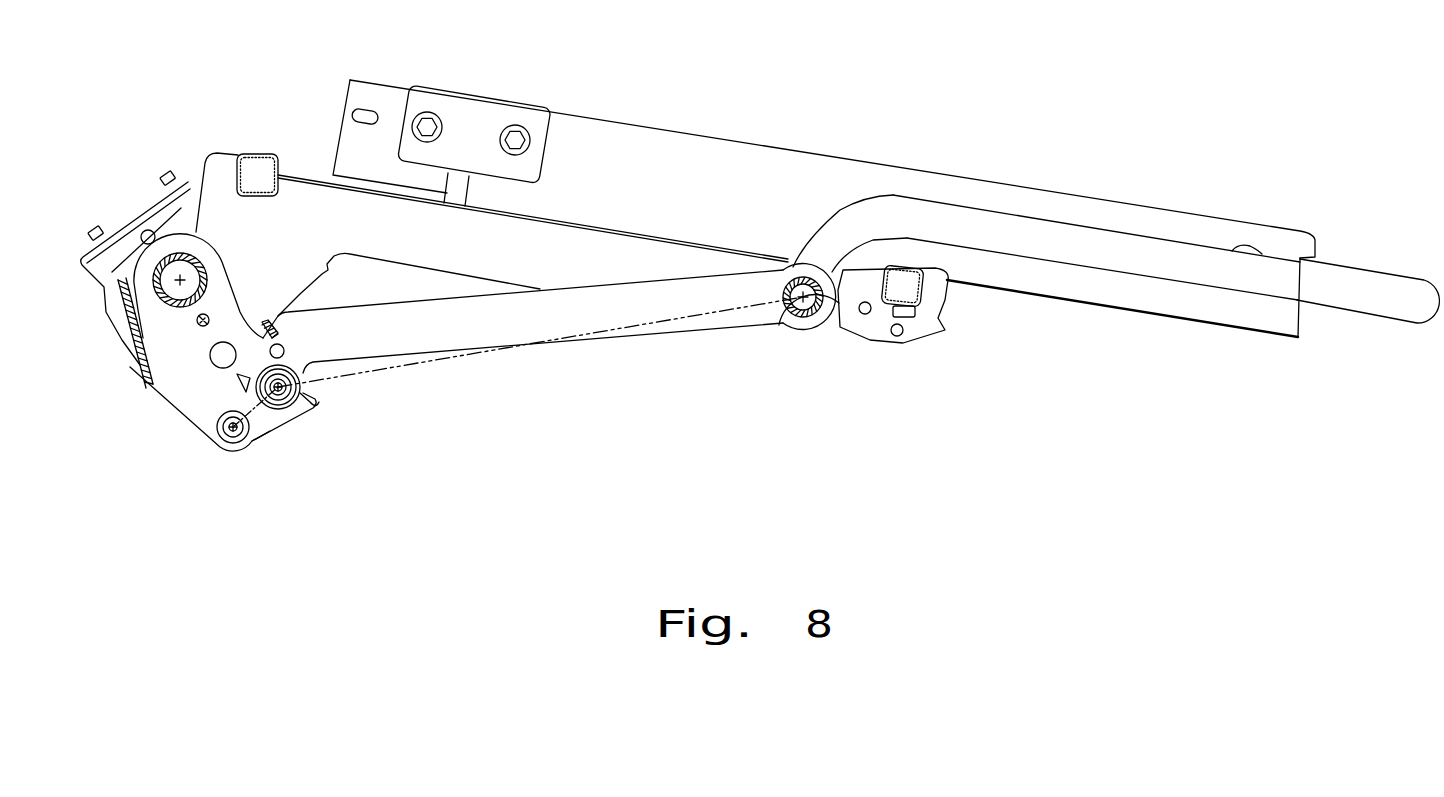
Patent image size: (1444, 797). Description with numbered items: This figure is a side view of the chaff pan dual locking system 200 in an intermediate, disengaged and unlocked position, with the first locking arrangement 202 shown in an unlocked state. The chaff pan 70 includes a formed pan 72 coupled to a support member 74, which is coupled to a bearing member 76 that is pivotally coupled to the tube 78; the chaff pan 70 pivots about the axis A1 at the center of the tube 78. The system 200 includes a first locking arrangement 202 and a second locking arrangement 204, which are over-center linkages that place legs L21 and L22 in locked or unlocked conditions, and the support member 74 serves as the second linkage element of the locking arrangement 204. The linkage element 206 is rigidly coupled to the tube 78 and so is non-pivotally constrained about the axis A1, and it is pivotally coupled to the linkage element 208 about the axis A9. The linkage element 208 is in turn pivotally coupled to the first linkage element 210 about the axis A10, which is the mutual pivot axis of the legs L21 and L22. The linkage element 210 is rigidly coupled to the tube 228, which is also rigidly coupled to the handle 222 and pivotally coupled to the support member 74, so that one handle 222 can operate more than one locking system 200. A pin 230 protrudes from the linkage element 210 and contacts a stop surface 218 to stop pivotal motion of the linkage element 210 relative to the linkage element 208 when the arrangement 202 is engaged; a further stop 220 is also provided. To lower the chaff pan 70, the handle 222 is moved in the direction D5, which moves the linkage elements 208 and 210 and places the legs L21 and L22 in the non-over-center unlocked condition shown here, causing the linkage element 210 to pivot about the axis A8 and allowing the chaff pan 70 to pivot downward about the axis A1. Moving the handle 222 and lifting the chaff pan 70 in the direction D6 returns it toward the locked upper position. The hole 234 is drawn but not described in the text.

The chaff pan 70 is at (909, 94).
The formed pan 72 is at (1228, 328).
The support member 74 is at (923, 333).
The bearing member 76 is at (137, 212).
The tube 78 is at (121, 344).
The chaff pan dual locking system 200 is at (773, 458).
The first locking arrangement 202 is at (433, 437).
The second locking arrangement 204 is at (654, 196).
The linkage element 206 is at (180, 414).
The second linkage element 208 is at (251, 408).
The first linkage element 210 is at (690, 334).
The stop surface 218 is at (237, 375).
The stop 220 is at (318, 398).
The handle 222 is at (1238, 249).
The tube 228 is at (808, 312).
The pin 230 is at (283, 346).
The hole 234 is at (226, 342).
The axis A1 is at (182, 280).
The axis A8 is at (799, 280).
The axis A9 is at (233, 428).
The axis A10 is at (283, 392).
The leg L21 is at (281, 393).
The leg L22 is at (433, 362).
The direction D5 is at (1392, 332).
The direction D6 is at (1407, 189).